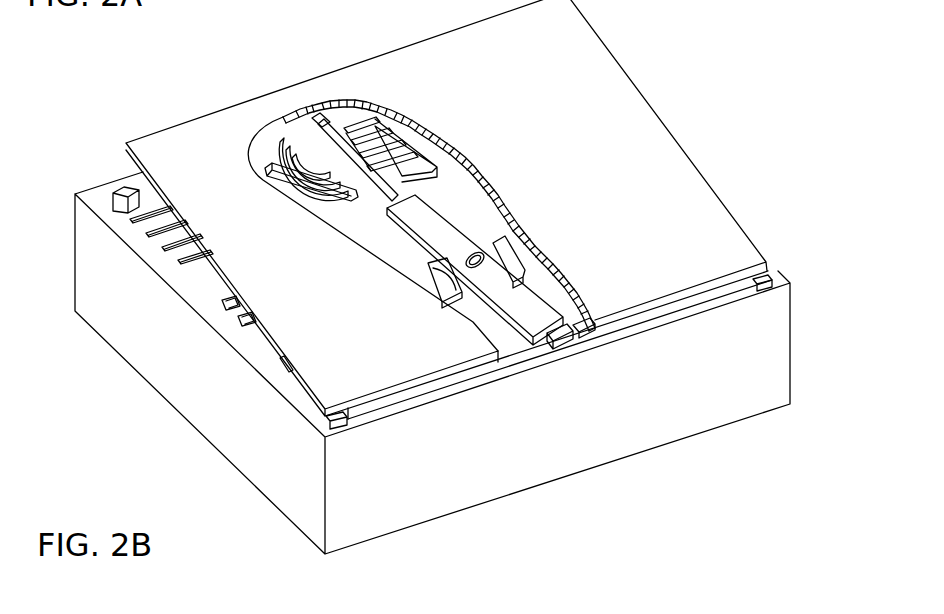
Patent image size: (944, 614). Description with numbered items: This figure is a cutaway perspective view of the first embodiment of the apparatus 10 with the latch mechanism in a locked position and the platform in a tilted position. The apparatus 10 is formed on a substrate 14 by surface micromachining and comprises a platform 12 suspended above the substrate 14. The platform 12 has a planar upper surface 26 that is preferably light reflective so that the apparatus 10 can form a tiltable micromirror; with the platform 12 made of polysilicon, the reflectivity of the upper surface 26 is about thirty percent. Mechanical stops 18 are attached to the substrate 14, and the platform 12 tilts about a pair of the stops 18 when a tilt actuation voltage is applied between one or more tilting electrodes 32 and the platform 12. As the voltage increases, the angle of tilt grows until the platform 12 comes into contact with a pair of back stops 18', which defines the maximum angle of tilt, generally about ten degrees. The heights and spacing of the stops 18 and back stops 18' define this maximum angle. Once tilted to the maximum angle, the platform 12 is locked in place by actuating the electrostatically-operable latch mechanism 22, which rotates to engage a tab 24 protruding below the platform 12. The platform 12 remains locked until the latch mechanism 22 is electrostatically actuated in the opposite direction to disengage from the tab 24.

The apparatus 10 is at (725, 456).
The platform 12 is at (125, 144).
The substrate 14 is at (363, 527).
The mechanical stop 18 is at (91, 204).
The back stop 18' is at (554, 373).
The latch mechanism 22 is at (418, 257).
The tab 24 is at (572, 344).
The upper surface 26 is at (348, 378).
The tilting electrode 32 is at (408, 395).